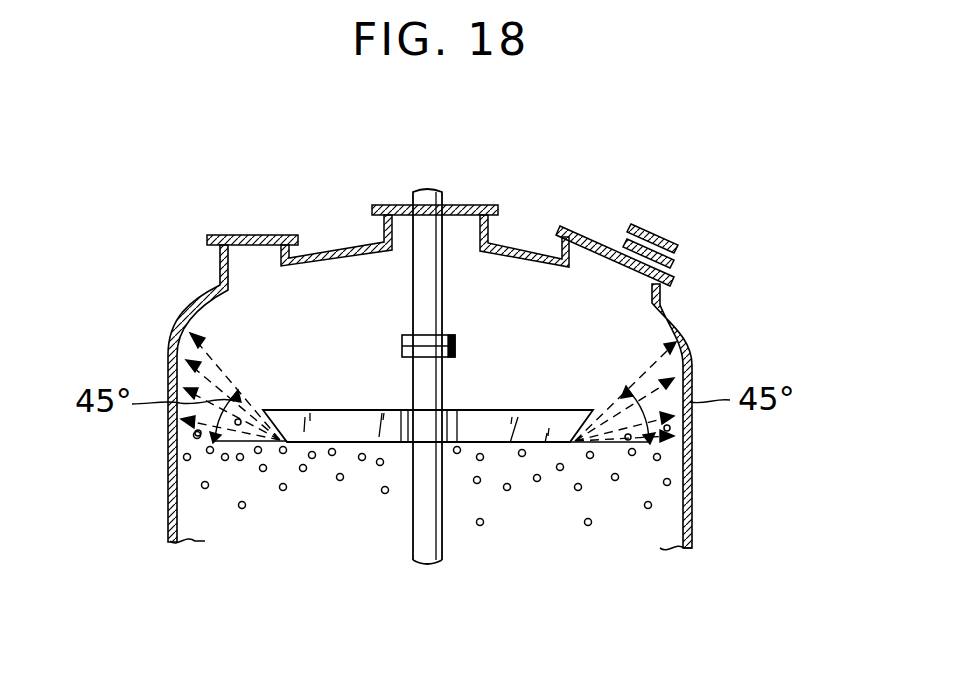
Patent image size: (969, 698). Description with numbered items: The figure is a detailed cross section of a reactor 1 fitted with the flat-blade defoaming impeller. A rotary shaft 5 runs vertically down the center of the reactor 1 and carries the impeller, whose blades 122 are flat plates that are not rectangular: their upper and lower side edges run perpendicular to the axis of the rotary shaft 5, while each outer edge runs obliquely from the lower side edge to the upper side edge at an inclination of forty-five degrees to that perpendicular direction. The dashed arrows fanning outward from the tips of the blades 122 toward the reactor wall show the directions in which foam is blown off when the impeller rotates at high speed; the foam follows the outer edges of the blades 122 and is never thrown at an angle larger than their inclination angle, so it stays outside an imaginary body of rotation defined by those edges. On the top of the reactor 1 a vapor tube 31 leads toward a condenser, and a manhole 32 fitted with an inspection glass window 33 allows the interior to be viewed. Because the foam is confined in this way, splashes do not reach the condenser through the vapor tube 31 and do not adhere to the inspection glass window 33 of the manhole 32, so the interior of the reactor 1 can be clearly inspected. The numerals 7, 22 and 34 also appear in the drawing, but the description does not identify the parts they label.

The reactor 1 is at (696, 517).
The rotary shaft 5 is at (432, 523).
The liquid with bubbles 7 is at (303, 471).
The rotary disc 22 is at (425, 422).
The vapor tube 31 is at (243, 235).
The manhole 32 is at (585, 228).
The inspection glass window 33 is at (679, 240).
The gasket plate 34 is at (677, 258).
The blade 122 is at (352, 437).